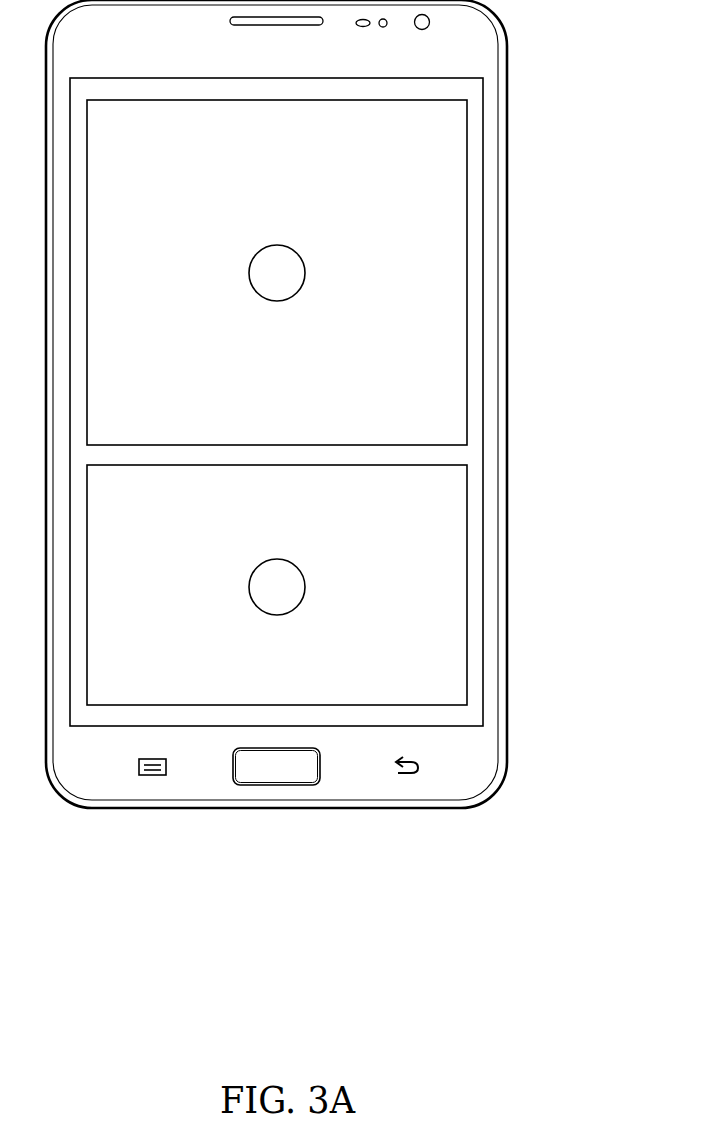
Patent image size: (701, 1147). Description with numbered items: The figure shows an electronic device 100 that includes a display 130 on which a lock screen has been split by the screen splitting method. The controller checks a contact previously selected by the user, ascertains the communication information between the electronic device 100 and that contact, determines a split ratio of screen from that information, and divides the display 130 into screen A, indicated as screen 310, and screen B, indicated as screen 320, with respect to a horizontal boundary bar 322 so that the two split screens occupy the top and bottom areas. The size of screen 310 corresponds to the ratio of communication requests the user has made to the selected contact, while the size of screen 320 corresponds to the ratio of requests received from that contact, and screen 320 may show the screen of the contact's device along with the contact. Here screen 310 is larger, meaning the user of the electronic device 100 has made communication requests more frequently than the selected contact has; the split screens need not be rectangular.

The electronic device 100 is at (508, 133).
The display 130 is at (483, 195).
The screen A 310 is at (467, 368).
The screen B 320 is at (467, 553).
The boundary bar 322 is at (438, 457).